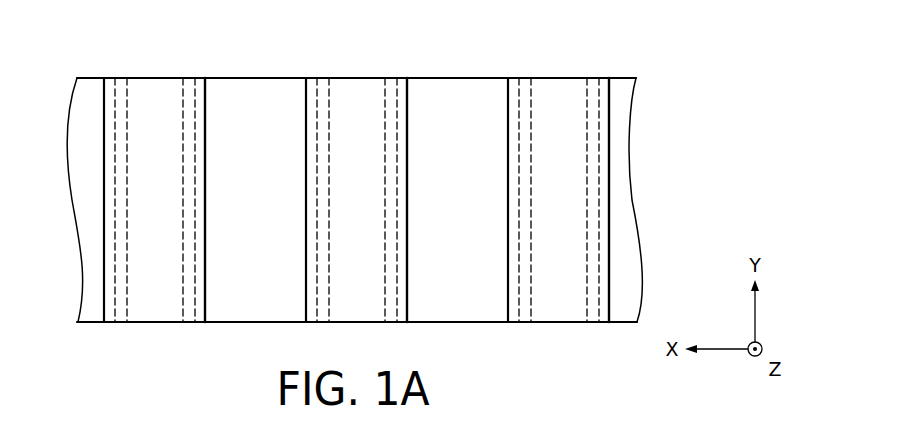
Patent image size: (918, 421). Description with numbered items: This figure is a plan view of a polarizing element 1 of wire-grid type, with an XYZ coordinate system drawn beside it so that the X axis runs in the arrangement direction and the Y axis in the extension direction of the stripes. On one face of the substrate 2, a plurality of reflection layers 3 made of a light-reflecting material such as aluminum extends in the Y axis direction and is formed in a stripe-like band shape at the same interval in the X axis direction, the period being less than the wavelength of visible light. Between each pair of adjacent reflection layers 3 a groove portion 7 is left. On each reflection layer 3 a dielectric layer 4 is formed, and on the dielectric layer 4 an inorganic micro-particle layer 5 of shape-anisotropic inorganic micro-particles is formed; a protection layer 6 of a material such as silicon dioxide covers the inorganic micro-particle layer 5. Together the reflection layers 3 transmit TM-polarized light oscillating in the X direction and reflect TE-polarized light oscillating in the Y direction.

The polarizing element 1 is at (639, 61).
The substrate 2 is at (625, 199).
The reflection layer 3 is at (153, 86).
The dielectric layer 4 is at (188, 76).
The inorganic micro-particle layer 5 is at (121, 76).
The protection layer 6 is at (199, 78).
The groove portion 7 is at (252, 304).